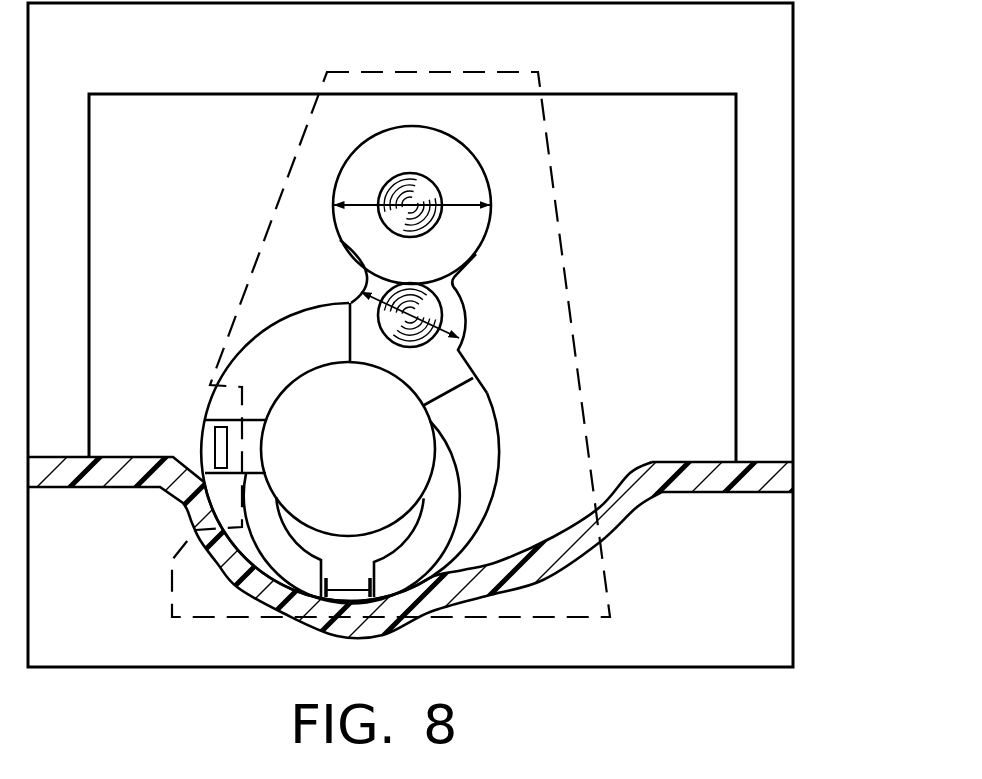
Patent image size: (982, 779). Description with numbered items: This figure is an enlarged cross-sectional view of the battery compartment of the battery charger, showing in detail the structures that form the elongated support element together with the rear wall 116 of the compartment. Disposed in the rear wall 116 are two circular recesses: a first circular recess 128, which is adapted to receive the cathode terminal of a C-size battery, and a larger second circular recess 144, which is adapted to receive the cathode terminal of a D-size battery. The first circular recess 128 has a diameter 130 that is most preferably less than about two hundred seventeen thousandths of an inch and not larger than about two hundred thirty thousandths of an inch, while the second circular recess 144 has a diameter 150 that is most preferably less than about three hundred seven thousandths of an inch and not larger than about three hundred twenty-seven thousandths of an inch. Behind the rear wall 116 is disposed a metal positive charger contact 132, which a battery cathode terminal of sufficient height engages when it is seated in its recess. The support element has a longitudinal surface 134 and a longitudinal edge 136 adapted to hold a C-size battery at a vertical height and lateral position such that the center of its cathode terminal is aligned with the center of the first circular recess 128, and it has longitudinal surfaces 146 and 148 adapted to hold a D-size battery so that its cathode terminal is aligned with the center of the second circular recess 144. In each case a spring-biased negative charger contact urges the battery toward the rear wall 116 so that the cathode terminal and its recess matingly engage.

The rear wall 116 is at (683, 213).
The first circular recess 128 is at (350, 299).
The diameter 130 is at (459, 349).
The metal positive charger contact 132 is at (410, 68).
The longitudinal surface 134 is at (553, 535).
The longitudinal edge 136 is at (229, 491).
The second circular recess 144 is at (343, 163).
The longitudinal surface 146 is at (628, 470).
The longitudinal surface 148 is at (192, 464).
The diameter 150 is at (452, 198).